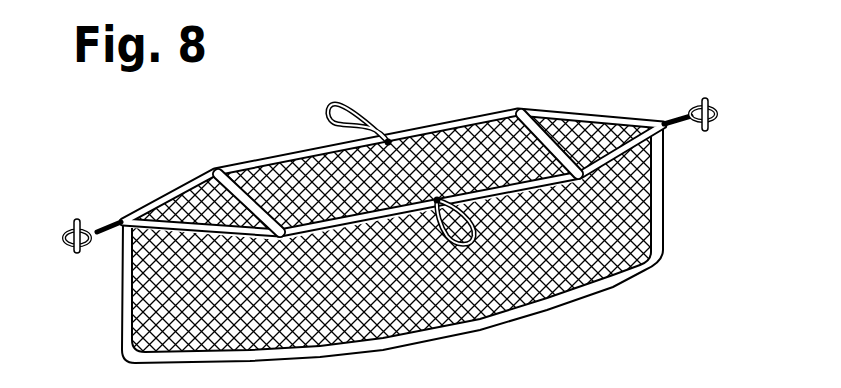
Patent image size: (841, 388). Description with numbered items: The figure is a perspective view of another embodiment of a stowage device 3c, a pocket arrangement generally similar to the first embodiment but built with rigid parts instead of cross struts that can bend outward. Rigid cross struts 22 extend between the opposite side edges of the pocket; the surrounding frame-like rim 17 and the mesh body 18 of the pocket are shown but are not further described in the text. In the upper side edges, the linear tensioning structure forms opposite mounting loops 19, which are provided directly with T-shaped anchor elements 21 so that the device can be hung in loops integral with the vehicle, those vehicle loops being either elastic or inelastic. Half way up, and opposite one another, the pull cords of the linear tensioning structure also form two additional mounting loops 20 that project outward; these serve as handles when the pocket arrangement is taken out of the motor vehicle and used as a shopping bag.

The mesh basket assembly 3c is at (484, 98).
The rigid frame rim 17 is at (502, 186).
The mesh basket body 18 is at (649, 271).
The mounting loop 19 is at (104, 216).
The additional mounting loop 20 is at (360, 104).
The T-shaped anchor element 21 is at (74, 226).
The rigid cross strut 22 is at (246, 196).